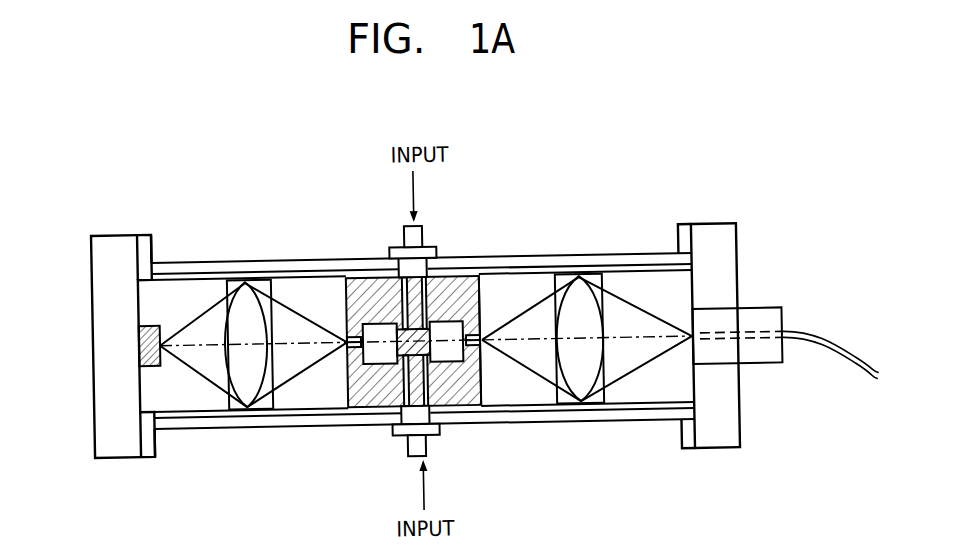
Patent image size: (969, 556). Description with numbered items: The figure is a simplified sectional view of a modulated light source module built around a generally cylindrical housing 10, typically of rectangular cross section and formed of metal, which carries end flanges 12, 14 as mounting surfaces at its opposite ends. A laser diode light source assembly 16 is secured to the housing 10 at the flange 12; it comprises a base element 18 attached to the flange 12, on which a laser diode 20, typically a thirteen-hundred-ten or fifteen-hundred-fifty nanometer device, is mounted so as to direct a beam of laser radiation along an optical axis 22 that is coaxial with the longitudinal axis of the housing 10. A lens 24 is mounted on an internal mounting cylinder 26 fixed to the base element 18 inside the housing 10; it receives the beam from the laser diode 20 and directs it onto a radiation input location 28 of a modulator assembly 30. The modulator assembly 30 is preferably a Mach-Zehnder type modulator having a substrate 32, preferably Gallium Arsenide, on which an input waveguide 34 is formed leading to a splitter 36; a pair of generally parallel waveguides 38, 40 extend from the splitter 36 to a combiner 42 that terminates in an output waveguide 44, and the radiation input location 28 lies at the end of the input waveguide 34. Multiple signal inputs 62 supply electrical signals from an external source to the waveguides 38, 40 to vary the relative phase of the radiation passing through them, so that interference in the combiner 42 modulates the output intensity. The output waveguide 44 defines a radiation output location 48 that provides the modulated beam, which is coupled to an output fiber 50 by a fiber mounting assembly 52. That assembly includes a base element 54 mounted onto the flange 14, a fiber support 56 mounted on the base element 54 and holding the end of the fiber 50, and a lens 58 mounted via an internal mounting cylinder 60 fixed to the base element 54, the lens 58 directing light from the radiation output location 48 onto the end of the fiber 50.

The housing 10 is at (244, 205).
The end flange 12 is at (148, 437).
The end flange 14 is at (686, 450).
The laser diode light source assembly 16 is at (74, 451).
The base element 18 is at (108, 449).
The laser diode 20 is at (153, 326).
The optical axis 22 is at (627, 332).
The lens 24 is at (241, 387).
The internal mounting cylinder 26 is at (198, 396).
The radiation input location 28 is at (347, 336).
The modulator assembly 30 is at (362, 394).
The substrate 32 is at (484, 318).
The input waveguide 34 is at (344, 344).
The splitter 36 is at (378, 337).
The waveguide 38 is at (382, 364).
The waveguide 40 is at (409, 338).
The combiner 42 is at (444, 350).
The output waveguide 44 is at (479, 323).
The radiation output location 48 is at (482, 342).
The output fiber 50 is at (823, 344).
The fiber mounting assembly 52 is at (752, 238).
The base element 54 is at (714, 240).
The fiber support 56 is at (759, 323).
The lens 58 is at (579, 293).
The internal mounting cylinder 60 is at (640, 401).
The signal inputs 62 is at (408, 227).